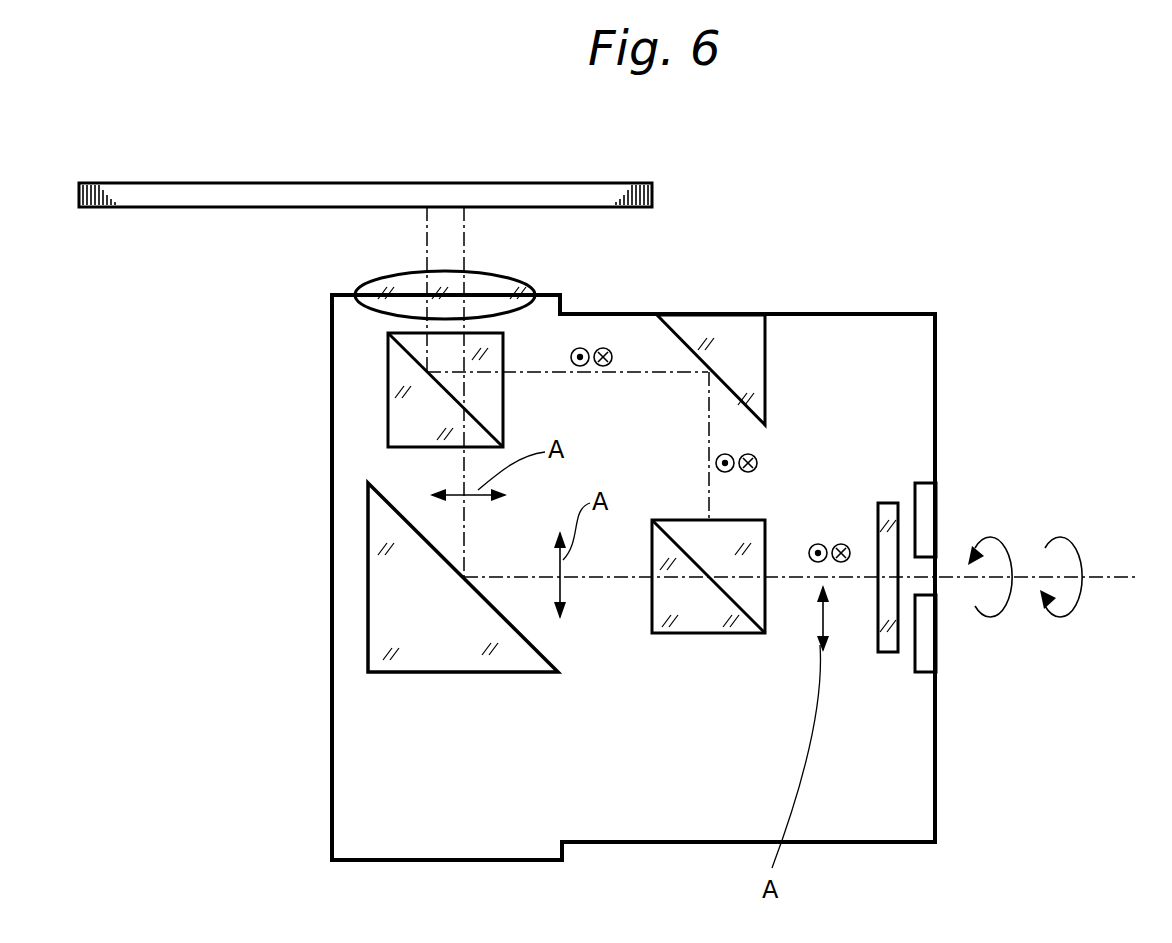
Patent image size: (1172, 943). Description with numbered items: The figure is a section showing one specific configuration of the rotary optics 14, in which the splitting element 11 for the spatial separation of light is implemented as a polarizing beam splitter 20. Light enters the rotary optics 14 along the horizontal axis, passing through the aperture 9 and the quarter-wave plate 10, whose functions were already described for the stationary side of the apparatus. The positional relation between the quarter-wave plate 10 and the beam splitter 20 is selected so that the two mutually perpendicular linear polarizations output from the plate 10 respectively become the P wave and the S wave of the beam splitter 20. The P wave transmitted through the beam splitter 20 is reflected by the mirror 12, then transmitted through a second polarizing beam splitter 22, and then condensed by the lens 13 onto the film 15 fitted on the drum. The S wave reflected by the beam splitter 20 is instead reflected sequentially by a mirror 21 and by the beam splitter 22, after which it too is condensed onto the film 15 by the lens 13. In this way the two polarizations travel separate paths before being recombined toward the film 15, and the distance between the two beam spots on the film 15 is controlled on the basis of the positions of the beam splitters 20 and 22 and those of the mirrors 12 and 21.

The aperture 9 is at (928, 505).
The quarter-wave plate 10 is at (888, 652).
The splitting element 11 is at (768, 500).
The mirror 12 is at (428, 625).
The lens 13 is at (505, 282).
The rotary optics 14 is at (640, 314).
The film 15 is at (622, 183).
The polarizing beam splitter 20 is at (697, 630).
The mirror 21 is at (737, 335).
The polarizing beam splitter 22 is at (412, 411).